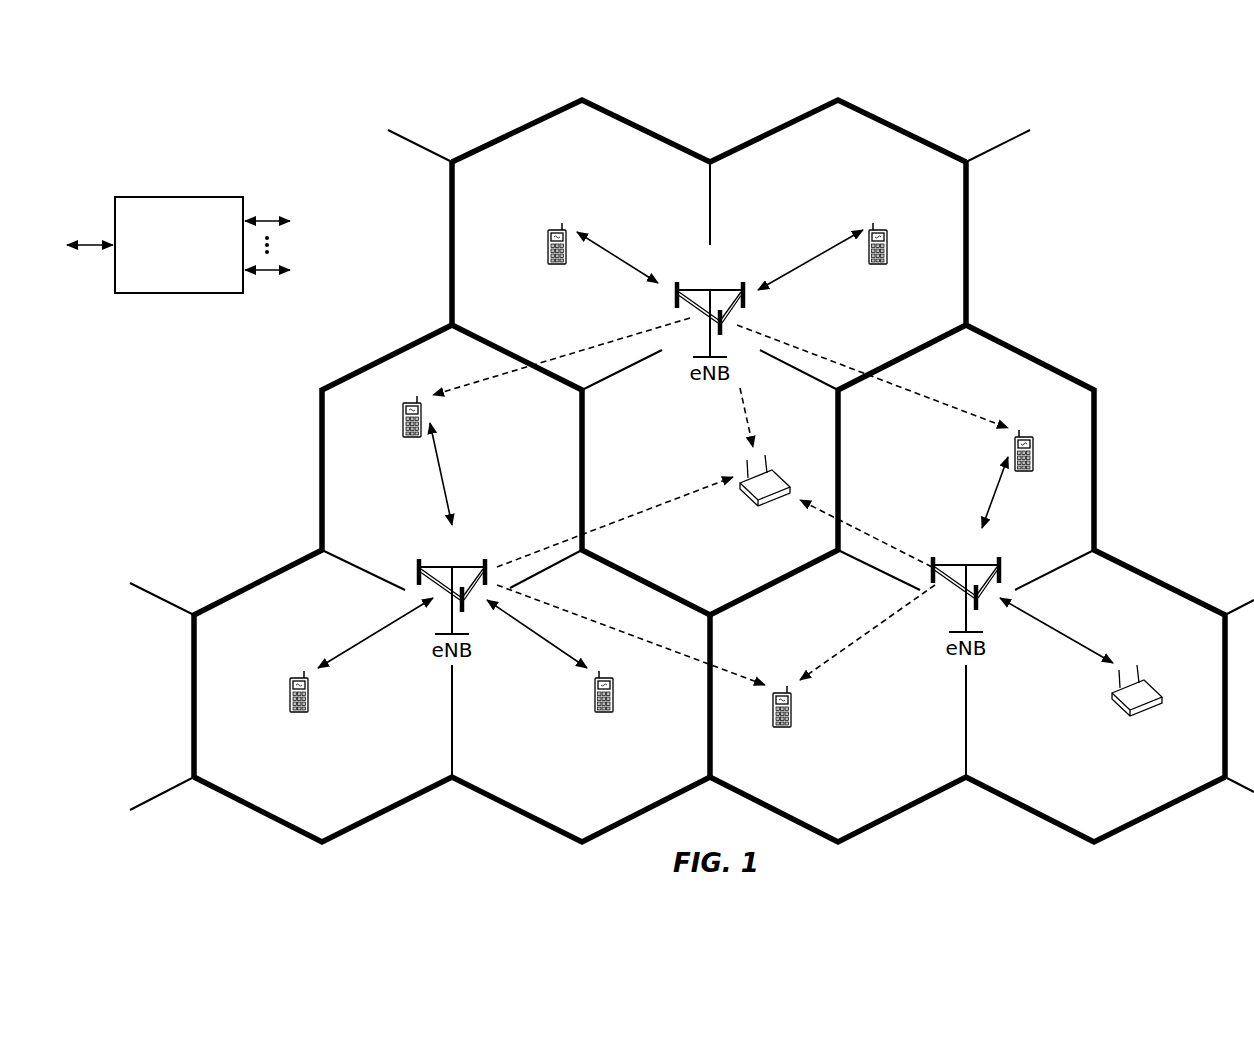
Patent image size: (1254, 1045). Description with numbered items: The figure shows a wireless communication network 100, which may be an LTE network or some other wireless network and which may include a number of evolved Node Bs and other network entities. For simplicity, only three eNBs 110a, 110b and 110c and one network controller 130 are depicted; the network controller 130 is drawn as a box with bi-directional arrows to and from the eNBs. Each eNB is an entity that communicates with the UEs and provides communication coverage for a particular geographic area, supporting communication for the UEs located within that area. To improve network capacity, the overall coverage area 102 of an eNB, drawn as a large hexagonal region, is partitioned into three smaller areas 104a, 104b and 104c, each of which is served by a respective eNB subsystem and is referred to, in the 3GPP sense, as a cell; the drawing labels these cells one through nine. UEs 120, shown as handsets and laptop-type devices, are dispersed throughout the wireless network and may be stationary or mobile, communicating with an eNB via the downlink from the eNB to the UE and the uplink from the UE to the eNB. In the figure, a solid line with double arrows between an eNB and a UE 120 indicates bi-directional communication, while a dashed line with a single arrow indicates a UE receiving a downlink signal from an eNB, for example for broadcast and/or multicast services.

The wireless communication network 100 is at (310, 129).
The overall coverage area 102 is at (967, 247).
The smaller area 104a is at (472, 360).
The smaller area 104b is at (505, 320).
The smaller area 104c is at (730, 592).
The eNB 110a is at (704, 290).
The eNB 110b is at (448, 565).
The eNB 110c is at (962, 565).
The UE 120 is at (548, 238).
The network controller 130 is at (177, 196).